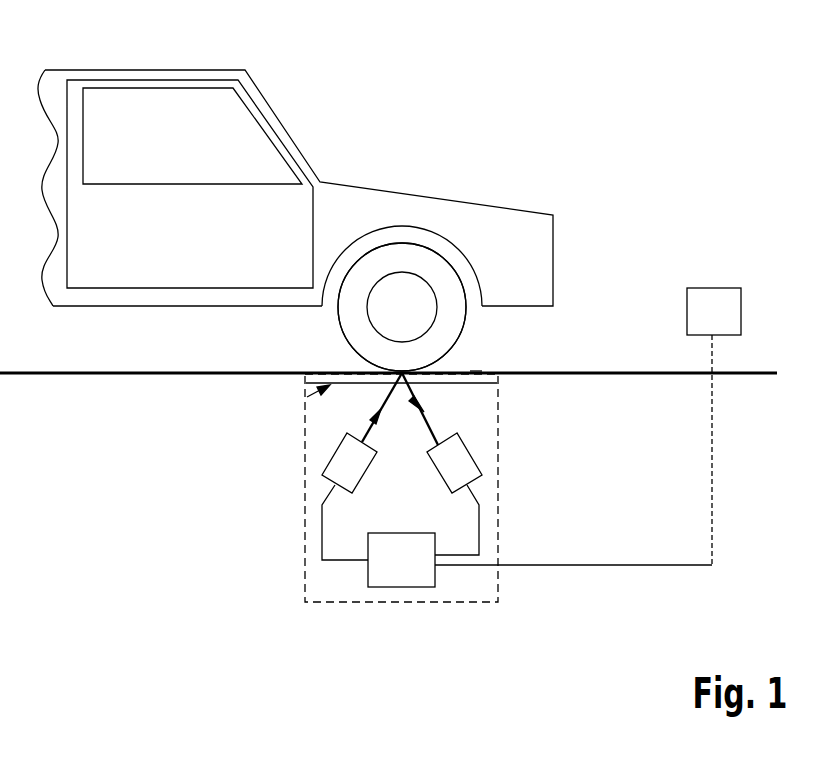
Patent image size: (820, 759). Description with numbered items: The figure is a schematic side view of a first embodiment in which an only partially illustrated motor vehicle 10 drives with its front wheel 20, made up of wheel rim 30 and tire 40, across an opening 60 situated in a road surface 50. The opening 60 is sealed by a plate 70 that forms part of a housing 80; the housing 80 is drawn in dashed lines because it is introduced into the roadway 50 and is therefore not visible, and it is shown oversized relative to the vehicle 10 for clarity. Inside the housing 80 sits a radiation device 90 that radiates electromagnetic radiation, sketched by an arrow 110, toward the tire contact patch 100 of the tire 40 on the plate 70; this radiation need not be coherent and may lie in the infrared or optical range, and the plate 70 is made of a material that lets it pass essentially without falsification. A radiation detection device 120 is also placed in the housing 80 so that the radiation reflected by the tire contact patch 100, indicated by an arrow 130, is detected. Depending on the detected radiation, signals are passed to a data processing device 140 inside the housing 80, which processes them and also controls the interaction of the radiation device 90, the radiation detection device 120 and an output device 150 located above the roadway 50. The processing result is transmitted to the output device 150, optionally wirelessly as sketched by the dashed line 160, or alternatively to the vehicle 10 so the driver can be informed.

The motor vehicle 10 is at (383, 106).
The front wheel 20 is at (475, 327).
The wheel rim 30 is at (402, 272).
The tire 40 is at (430, 248).
The road surface 50 is at (206, 372).
The opening 60 is at (470, 370).
The plate 70 is at (316, 373).
The housing 80 is at (338, 603).
The radiation device 90 is at (330, 466).
The tire contact patch 100 is at (307, 397).
The arrow (emitted radiation) 110 is at (373, 410).
The radiation detection device 120 is at (475, 458).
The arrow (reflected radiation) 130 is at (428, 405).
The data processing device 140 is at (403, 588).
The output device 150 is at (712, 288).
The dashed line (wireless transmission) 160 is at (712, 350).